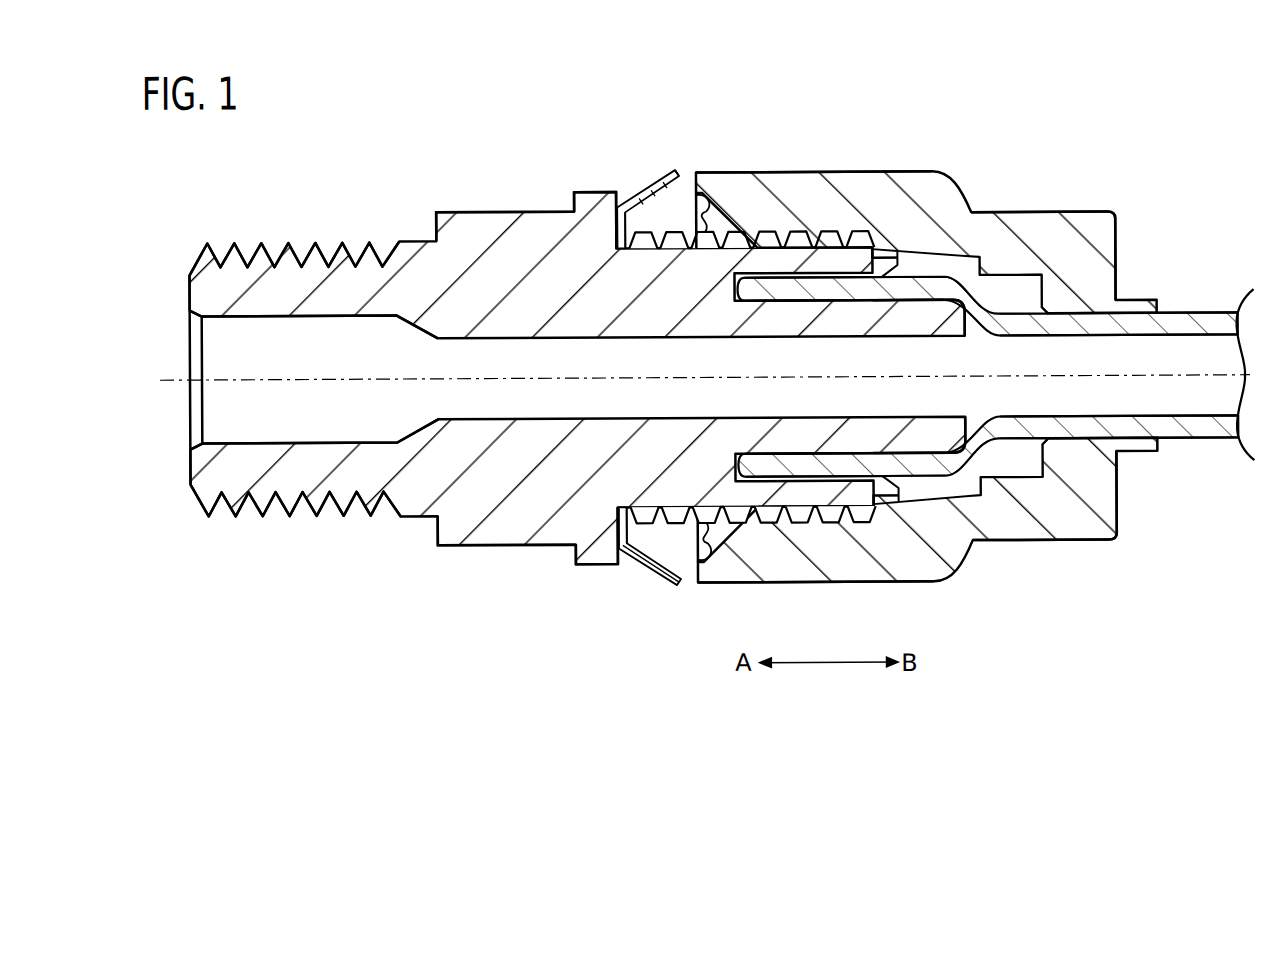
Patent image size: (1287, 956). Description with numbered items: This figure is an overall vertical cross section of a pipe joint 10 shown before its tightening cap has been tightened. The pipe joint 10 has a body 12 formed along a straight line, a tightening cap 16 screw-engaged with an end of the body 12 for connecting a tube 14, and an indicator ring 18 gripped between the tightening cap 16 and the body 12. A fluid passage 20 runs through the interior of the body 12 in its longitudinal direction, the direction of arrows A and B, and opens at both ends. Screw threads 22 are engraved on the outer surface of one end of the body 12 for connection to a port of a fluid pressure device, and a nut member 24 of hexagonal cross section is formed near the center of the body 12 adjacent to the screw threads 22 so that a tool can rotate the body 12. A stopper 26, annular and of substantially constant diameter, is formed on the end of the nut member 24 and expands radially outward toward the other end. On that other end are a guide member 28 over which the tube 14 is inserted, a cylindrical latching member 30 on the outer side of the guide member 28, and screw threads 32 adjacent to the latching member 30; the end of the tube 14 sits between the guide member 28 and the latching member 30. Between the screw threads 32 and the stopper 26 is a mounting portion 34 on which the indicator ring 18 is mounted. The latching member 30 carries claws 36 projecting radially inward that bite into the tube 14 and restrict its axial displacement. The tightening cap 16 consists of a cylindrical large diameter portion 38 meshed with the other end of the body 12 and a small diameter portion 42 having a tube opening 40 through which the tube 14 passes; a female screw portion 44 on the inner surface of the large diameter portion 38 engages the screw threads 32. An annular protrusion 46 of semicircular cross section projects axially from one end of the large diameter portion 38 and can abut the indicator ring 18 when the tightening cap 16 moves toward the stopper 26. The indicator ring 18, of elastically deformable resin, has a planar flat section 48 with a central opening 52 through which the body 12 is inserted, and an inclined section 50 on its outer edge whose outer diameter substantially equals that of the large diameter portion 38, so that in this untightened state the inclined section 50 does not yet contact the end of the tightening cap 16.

The pipe joint 10 is at (562, 94).
The body 12 is at (470, 563).
The tube 14 is at (1207, 320).
The tightening cap 16 is at (910, 147).
The indicator ring 18 is at (664, 176).
The fluid passage 20 is at (292, 318).
The screw threads 22 is at (290, 508).
The nut member 24 is at (480, 219).
The stopper 26 is at (590, 200).
The guide member 28 is at (915, 331).
The latching member 30 is at (888, 263).
The screw threads 32 is at (750, 520).
The mounting portion 34 is at (640, 562).
The claws 36 is at (876, 293).
The large diameter portion 38 is at (800, 186).
The tube opening 40 is at (1082, 320).
The small diameter portion 42 is at (1068, 232).
The female screw portion 44 is at (845, 518).
The protrusion 46 is at (695, 205).
The flat section 48 is at (617, 228).
The inclined section 50 is at (640, 194).
The opening 52 is at (630, 511).